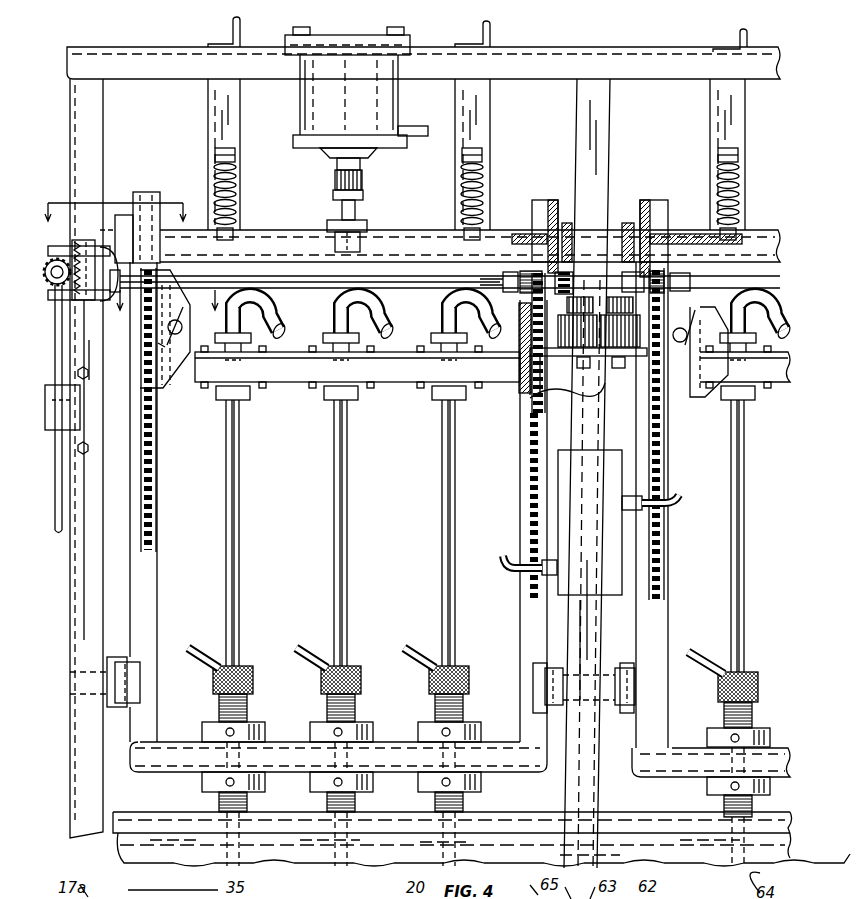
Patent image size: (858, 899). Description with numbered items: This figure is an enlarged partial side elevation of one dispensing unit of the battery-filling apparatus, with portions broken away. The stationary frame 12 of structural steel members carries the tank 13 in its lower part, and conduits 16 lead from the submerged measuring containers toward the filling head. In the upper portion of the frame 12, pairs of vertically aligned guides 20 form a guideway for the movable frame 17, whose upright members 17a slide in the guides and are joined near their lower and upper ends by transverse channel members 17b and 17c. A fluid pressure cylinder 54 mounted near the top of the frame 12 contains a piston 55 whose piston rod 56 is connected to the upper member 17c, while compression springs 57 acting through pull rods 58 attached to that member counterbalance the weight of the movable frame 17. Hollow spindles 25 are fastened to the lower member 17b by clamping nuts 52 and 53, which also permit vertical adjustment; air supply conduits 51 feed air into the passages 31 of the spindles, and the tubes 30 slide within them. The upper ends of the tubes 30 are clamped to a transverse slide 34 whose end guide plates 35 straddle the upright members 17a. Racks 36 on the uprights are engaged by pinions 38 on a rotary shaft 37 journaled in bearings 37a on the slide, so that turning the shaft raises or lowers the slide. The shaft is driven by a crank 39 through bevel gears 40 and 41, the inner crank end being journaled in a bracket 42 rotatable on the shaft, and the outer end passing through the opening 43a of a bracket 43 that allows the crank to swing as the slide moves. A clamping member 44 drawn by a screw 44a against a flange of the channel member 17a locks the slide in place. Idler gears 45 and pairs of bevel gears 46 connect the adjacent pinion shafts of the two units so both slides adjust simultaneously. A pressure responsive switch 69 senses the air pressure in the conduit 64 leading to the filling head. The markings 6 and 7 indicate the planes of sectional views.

The section line 6- 6 is at (165, 312).
The section line 7- 7 is at (113, 201).
The frame 12 is at (70, 597).
The tank 13 is at (534, 812).
The conduits 16 is at (336, 295).
The movable frame 17 is at (158, 612).
The upright members 17a is at (150, 570).
The transverse channel shaped member 17b is at (500, 735).
The transverse channel shaped member 17c is at (400, 228).
The guides 20 is at (135, 697).
The hollow spindles 25 is at (324, 800).
The tubes 30 is at (440, 449).
The passages 31 is at (565, 386).
The slide 34 is at (292, 352).
The guide plates 35 is at (168, 388).
The racks 36 is at (525, 326).
The rotary shaft 37 is at (400, 278).
The bearings 37a is at (500, 277).
The pinions 38 is at (535, 265).
The crank 39 is at (55, 486).
The bevel gear 40 is at (58, 257).
The bevel gear 41 is at (82, 256).
The bracket 42 is at (50, 302).
The bracket 43 is at (48, 396).
The opening 43a is at (55, 408).
The clamping member 44 is at (190, 292).
The screw 44a is at (170, 332).
The idler gears 45 is at (568, 360).
The bevel gears 46 is at (572, 286).
The air supply conduits 51 is at (196, 650).
The clamping nut 52 is at (370, 785).
The clamping nut 53 is at (372, 726).
The fluid pressure cylinder 54 is at (302, 99).
The piston 55 is at (400, 90).
The piston rod 56 is at (340, 200).
The compression springs 57 is at (484, 178).
The pull rods 58 is at (482, 196).
The conduit 64 is at (505, 590).
The pressure responsive switch 69 is at (612, 458).